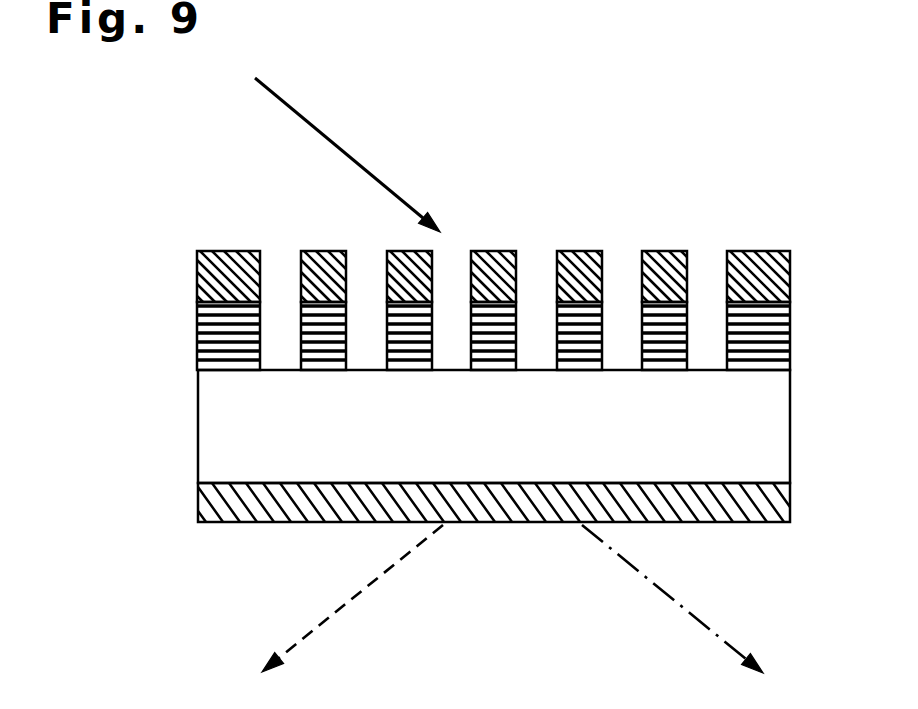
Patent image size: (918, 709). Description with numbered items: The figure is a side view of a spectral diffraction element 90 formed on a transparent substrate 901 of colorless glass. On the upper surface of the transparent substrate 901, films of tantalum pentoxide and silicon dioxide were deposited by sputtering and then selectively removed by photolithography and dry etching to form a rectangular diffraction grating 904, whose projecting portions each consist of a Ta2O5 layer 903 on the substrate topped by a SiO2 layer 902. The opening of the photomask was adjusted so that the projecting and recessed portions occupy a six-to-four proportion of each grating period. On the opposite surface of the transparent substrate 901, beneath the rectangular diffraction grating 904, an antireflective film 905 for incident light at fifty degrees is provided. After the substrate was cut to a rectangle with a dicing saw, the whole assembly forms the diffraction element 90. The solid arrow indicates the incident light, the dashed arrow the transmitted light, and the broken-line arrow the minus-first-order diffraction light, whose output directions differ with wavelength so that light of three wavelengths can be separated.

The diffraction element 90 is at (815, 223).
The transparent substrate 901 is at (198, 447).
The SiO2 layer 902 is at (665, 258).
The Ta2O5 layer 903 is at (517, 327).
The rectangular diffraction grating 904 is at (184, 267).
The antireflective film 905 is at (198, 523).